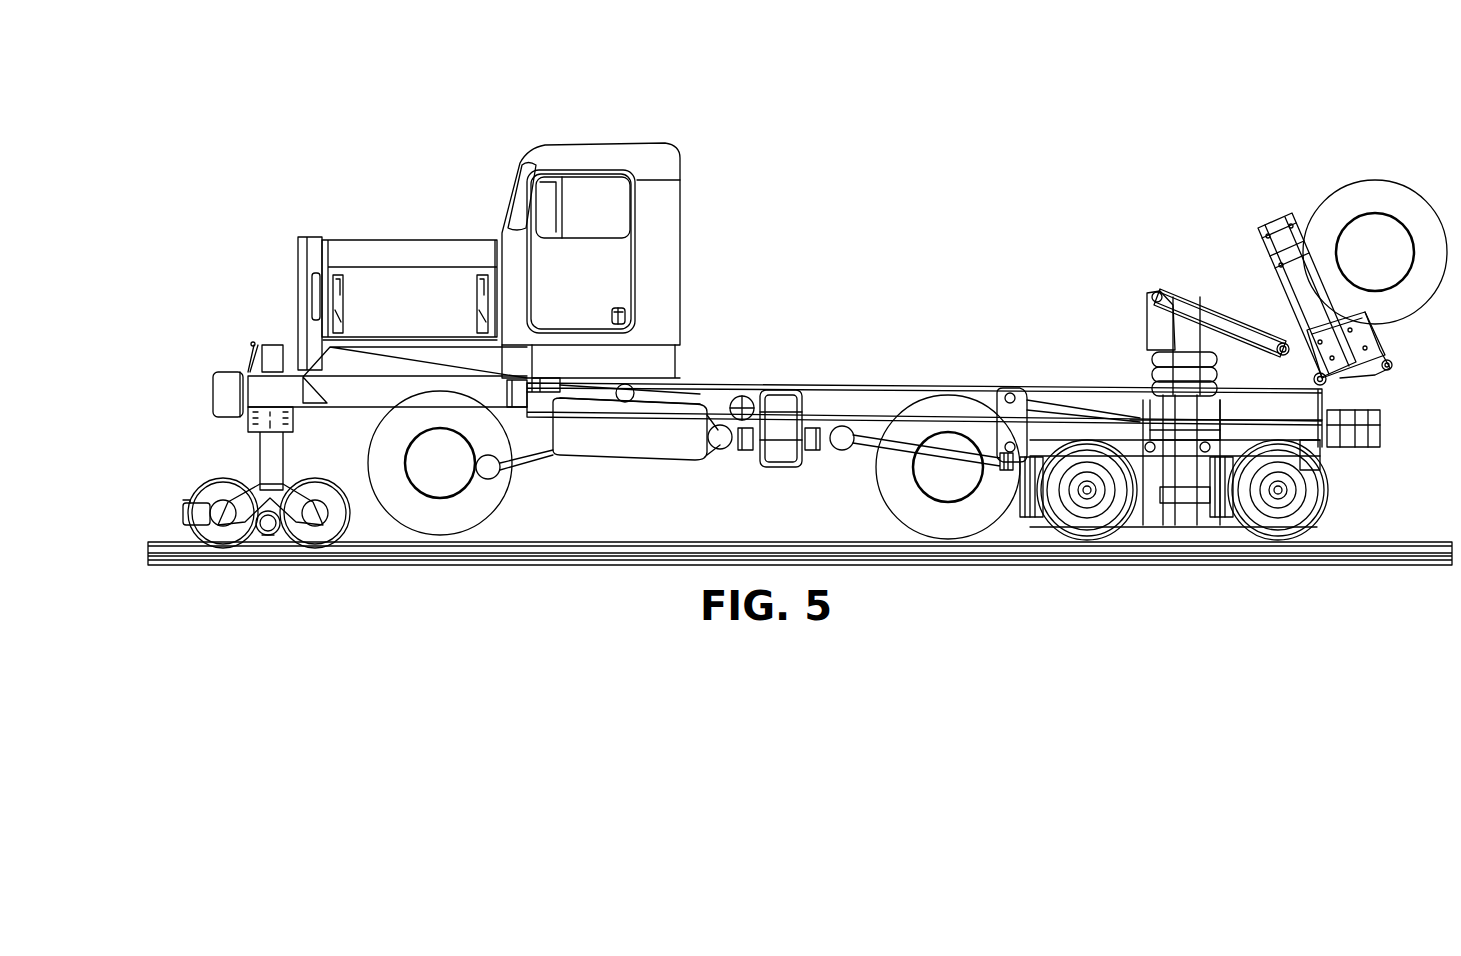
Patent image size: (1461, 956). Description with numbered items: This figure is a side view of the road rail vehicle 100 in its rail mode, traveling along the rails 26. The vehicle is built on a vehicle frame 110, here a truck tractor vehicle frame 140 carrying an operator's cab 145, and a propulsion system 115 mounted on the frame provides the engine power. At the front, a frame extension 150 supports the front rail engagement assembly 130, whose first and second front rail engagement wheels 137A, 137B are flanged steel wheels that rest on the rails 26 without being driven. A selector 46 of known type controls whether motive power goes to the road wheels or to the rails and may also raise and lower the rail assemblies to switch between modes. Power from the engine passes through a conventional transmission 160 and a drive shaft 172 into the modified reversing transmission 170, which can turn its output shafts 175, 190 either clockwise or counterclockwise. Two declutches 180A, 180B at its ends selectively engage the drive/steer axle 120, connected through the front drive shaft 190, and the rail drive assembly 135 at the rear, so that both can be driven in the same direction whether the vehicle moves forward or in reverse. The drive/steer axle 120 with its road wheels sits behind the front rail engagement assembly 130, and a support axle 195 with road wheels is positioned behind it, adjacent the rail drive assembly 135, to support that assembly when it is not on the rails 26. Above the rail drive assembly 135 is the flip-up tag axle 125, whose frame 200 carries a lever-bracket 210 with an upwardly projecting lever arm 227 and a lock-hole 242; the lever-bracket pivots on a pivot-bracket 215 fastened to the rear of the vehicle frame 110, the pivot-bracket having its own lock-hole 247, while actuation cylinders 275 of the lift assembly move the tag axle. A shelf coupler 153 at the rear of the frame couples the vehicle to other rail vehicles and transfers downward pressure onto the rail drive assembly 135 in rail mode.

The road rail vehicle 100 is at (890, 110).
The propulsion system 115 is at (405, 312).
The operator's cab 145 is at (660, 243).
The frame extension 150 is at (252, 380).
The selector 46 is at (272, 345).
The front rail engagement assembly 130 is at (262, 505).
The first front rail engagement wheel 137A is at (200, 498).
The second front rail engagement wheel 137B is at (342, 520).
The transmission 160 is at (626, 384).
The truck tractor vehicle frame 140 is at (680, 385).
The drive shaft 172 is at (715, 405).
The vehicle frame 110 is at (838, 389).
The drive/steer axle 120 is at (452, 467).
The front drive shaft 190 is at (572, 460).
The declutch 180A is at (745, 450).
The modified reversing transmission 170 is at (780, 445).
The declutch 180B is at (806, 450).
The output shaft 175 is at (868, 450).
The rails 26 is at (698, 552).
The support axle 195 is at (940, 472).
The flip-up tag axle 125 is at (1364, 246).
The frame 200 is at (1324, 286).
The actuation cylinders 275 is at (1198, 312).
The lever arm 227 is at (1282, 340).
The lever-bracket 210 is at (1372, 352).
The pivot-bracket 215 is at (1313, 380).
The lock-hole 242 is at (1386, 372).
The shelf coupler 153 is at (1383, 440).
The lock-hole 247 is at (1320, 455).
The rail drive assembly 135 is at (1218, 418).